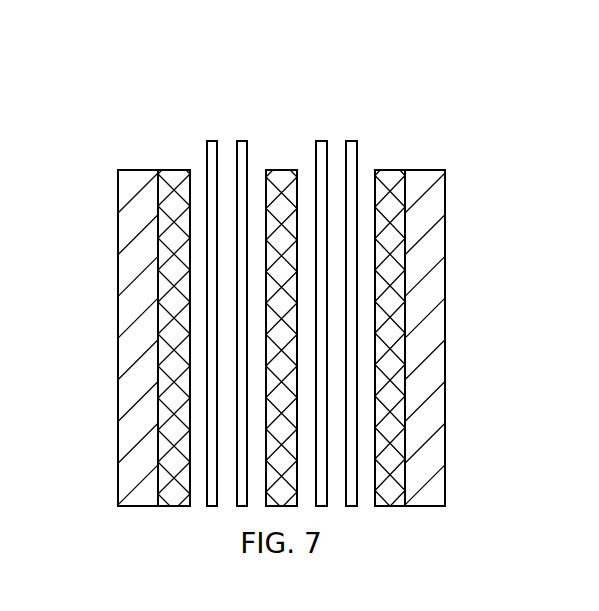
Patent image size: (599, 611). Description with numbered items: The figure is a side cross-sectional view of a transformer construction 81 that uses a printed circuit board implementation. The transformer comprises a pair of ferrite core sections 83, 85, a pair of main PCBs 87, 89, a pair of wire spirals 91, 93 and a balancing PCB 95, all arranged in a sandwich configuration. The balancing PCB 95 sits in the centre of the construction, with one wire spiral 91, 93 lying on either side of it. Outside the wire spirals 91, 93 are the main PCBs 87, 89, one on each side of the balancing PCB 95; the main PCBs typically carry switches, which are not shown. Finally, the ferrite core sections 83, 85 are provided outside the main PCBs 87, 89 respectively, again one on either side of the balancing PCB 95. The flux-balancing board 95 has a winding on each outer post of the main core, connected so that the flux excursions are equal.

The transformer construction 81 is at (432, 75).
The ferrite core section 83 is at (127, 353).
The ferrite core section 85 is at (438, 362).
The main PCB 87 is at (175, 178).
The main PCB 89 is at (394, 178).
The wire spiral 91 is at (220, 135).
The wire spiral 93 is at (343, 131).
The balancing PCB 95 is at (277, 178).